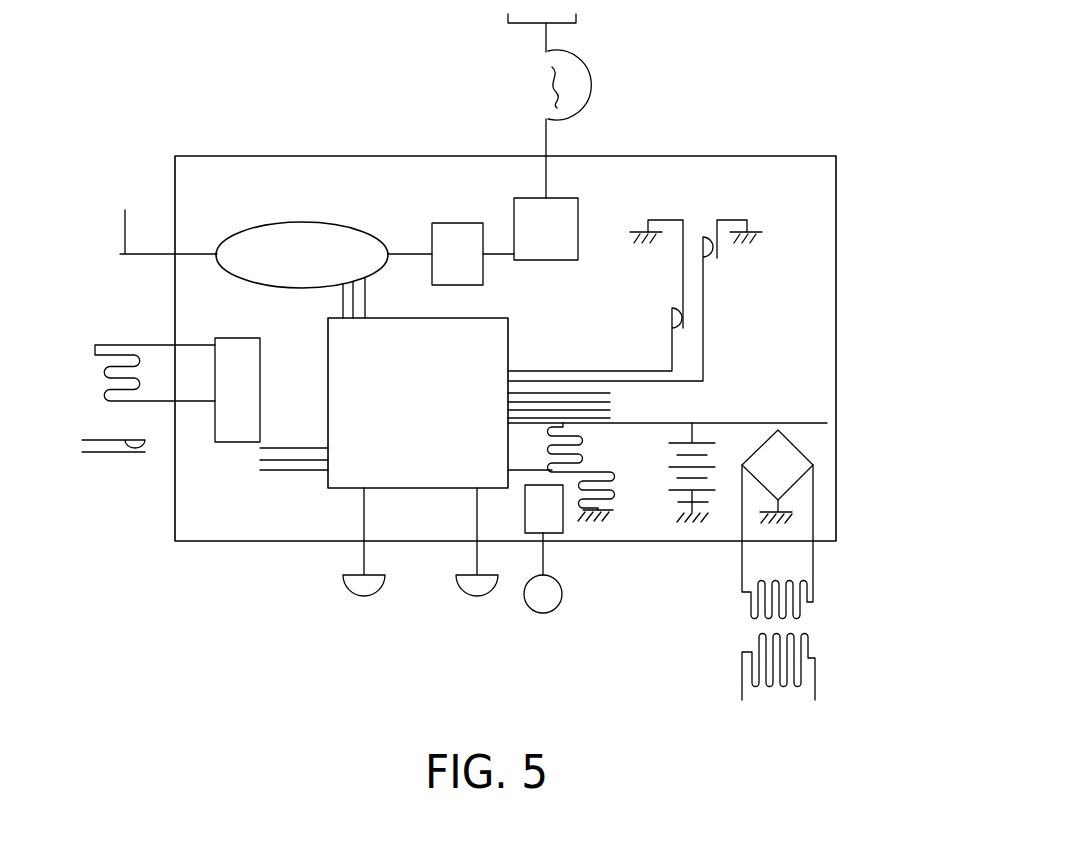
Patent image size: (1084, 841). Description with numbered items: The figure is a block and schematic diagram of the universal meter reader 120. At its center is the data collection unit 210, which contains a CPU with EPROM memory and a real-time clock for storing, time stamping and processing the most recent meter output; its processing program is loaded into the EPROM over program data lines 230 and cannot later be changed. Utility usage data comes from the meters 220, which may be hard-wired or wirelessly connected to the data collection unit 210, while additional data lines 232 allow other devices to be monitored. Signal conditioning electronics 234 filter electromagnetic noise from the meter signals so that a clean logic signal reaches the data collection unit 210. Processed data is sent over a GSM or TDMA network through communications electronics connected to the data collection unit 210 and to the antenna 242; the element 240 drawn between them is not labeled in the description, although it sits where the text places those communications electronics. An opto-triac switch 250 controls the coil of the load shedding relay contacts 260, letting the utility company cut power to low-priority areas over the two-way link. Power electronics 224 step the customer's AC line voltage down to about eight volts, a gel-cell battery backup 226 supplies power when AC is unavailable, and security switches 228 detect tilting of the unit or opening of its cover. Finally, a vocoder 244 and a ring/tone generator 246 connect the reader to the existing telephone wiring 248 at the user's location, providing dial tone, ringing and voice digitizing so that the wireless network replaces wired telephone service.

The universal meter reader 120 is at (863, 320).
The data collection unit 210 is at (508, 345).
The meters 220 is at (543, 613).
The power electronics 224 is at (817, 677).
The battery backup 226 is at (713, 493).
The security switches 228 is at (665, 220).
The program data lines 230 is at (617, 390).
The additional data lines 232 is at (257, 445).
The signal conditioning electronics 234 is at (557, 523).
The transceiver 240 is at (313, 221).
The antenna 242 is at (123, 234).
The vocoder 244 is at (462, 223).
The ring/tone generator 246 is at (578, 200).
The existing telephone wiring 248 is at (546, 40).
The opto-triac switch 250 is at (235, 340).
The load shedding relay contacts 260 is at (105, 454).